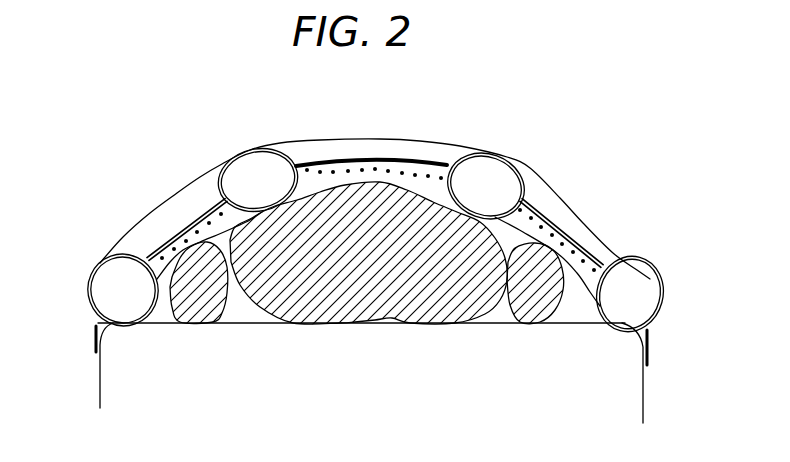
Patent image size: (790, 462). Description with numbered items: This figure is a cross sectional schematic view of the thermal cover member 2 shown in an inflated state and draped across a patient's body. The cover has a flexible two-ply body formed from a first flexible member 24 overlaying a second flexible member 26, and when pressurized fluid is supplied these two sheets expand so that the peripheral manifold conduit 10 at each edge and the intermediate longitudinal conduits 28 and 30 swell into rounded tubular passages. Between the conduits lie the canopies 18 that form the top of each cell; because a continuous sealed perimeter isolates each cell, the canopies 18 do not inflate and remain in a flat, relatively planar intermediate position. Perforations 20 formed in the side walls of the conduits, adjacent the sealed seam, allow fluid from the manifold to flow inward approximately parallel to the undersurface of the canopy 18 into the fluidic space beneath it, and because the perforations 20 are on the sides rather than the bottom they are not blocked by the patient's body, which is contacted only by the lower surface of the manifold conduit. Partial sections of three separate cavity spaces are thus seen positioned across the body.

The thermal cover member 2 is at (585, 198).
The peripheral manifold conduit 10 is at (97, 275).
The canopy 18 is at (165, 242).
The perforations 20 is at (165, 245).
The first flexible member 24 is at (504, 157).
The second flexible member 26 is at (463, 196).
The intermediate longitudinal conduit 28 is at (253, 149).
The intermediate longitudinal conduit 30 is at (460, 155).